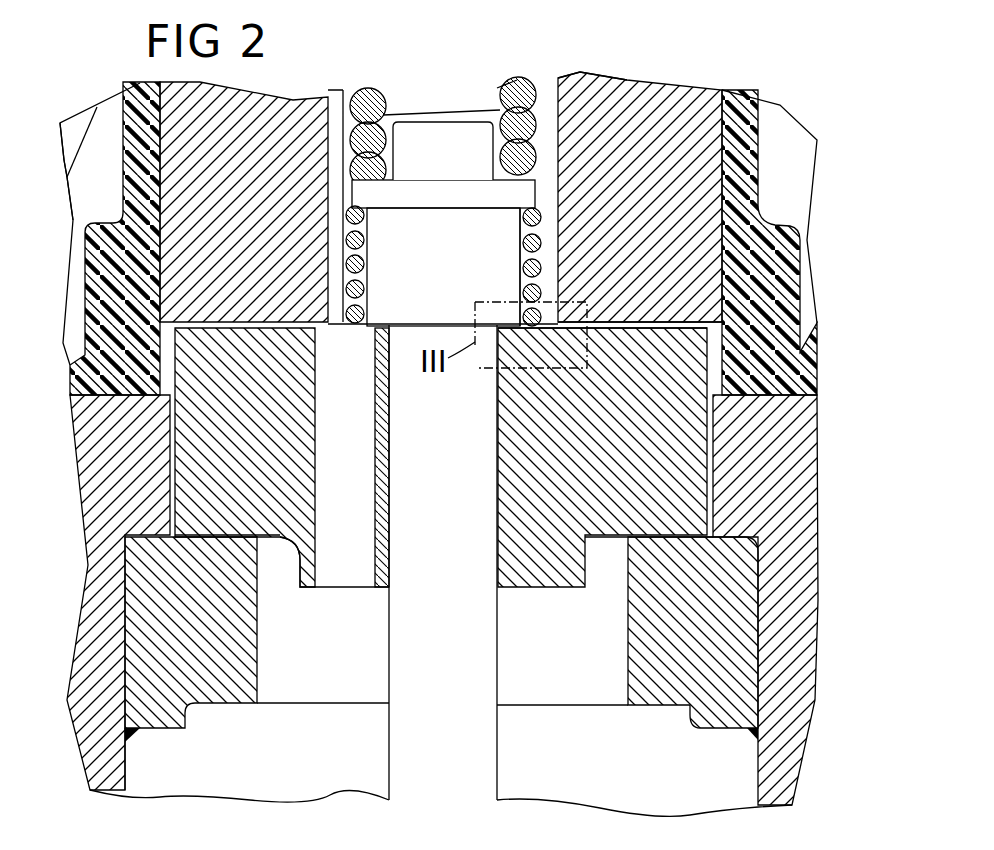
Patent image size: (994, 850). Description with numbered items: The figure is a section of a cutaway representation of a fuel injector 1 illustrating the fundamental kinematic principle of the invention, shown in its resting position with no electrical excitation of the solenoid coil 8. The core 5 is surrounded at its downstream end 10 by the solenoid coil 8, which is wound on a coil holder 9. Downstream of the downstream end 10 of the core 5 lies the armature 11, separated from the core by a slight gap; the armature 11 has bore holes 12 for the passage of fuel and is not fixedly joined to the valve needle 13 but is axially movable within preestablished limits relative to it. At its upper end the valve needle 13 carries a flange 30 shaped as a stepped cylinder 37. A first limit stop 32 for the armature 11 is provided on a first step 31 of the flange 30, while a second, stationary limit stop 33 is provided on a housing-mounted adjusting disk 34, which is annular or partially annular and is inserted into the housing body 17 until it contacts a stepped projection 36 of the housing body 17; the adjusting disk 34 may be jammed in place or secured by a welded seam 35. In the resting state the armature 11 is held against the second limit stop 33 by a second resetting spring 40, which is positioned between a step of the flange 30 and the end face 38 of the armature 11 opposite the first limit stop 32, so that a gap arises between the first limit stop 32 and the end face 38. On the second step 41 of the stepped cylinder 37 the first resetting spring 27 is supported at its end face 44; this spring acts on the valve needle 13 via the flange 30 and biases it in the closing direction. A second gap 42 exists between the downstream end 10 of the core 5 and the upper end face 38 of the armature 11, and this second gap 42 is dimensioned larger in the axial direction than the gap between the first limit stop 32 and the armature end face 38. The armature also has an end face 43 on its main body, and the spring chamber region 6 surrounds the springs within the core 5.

The fuel injector 1 is at (50, 452).
The core 5 is at (663, 110).
The spring chamber 6 is at (548, 91).
The solenoid coil 8 is at (805, 130).
The coil holder 9 is at (775, 280).
The downstream end 10 is at (246, 335).
The armature 11 is at (675, 478).
The bore holes 12 is at (327, 555).
The valve needle 13 is at (463, 497).
The housing body 17 is at (782, 437).
The first resetting spring 27 is at (370, 90).
The flange 30 is at (590, 150).
The first step 31 is at (458, 252).
The first limit stop 32 is at (385, 318).
The second limit stop 33 is at (229, 520).
The adjusting disk 34 is at (143, 613).
The welded seam 35 is at (133, 736).
The stepped projection 36 is at (733, 527).
The stepped cylinder 37 is at (560, 243).
The end face 38 is at (522, 293).
The second resetting spring 40 is at (522, 270).
The second step 41 is at (423, 190).
The second gap 42 is at (630, 323).
The end face 43 is at (215, 565).
The end face 44 is at (500, 166).